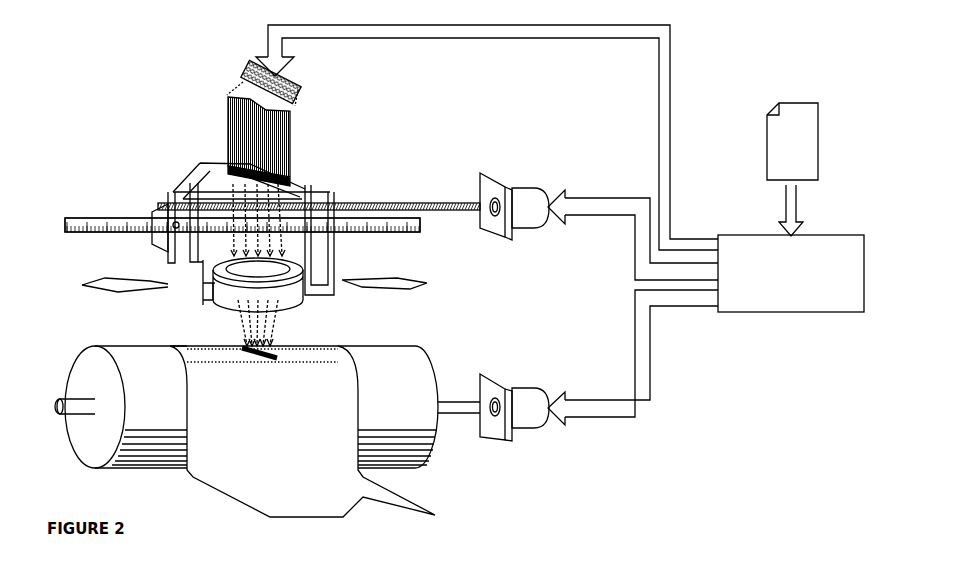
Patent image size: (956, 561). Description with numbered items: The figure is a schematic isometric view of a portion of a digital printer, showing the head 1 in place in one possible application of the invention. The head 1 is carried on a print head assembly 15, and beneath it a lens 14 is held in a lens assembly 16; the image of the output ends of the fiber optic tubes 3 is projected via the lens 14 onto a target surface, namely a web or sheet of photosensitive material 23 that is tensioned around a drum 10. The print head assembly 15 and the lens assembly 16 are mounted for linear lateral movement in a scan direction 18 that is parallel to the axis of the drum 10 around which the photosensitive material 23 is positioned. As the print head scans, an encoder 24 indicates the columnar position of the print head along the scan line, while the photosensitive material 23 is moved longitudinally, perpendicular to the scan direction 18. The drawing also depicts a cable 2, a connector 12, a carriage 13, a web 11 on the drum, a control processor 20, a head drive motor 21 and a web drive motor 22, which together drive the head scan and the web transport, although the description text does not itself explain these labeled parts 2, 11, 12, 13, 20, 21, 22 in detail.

The head 1 is at (263, 125).
The ribbon cable 2 is at (302, 148).
The fiber optic tubes 3 is at (286, 172).
The drum 10 is at (246, 407).
The web 11 is at (302, 431).
The cable connector 12 is at (300, 103).
The carriage 13 is at (209, 211).
The lens 14 is at (284, 267).
The print head assembly 15 is at (200, 182).
The lens assembly 16 is at (203, 283).
The scan direction 18 is at (384, 296).
The control processor 20 is at (789, 318).
The head drive motor 21 is at (525, 185).
The web drive motor 22 is at (525, 385).
The photosensitive material 23 is at (205, 347).
The encoder 24 is at (765, 165).